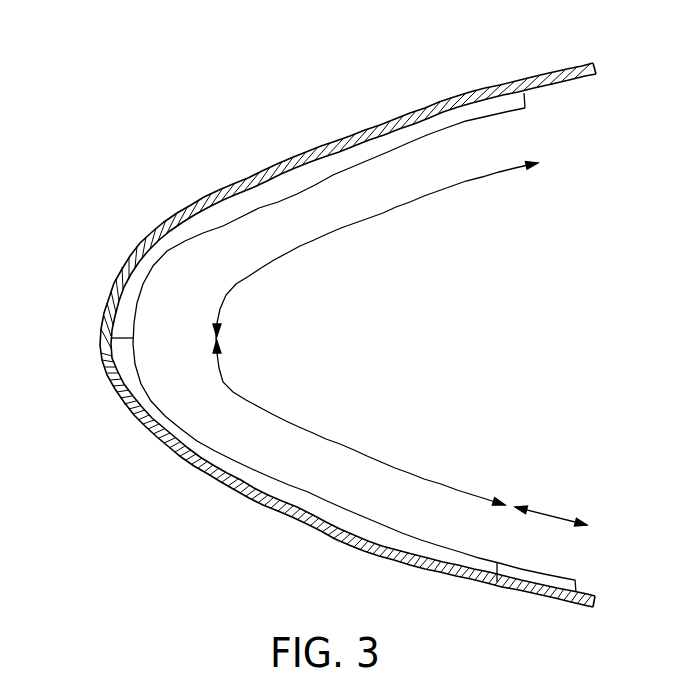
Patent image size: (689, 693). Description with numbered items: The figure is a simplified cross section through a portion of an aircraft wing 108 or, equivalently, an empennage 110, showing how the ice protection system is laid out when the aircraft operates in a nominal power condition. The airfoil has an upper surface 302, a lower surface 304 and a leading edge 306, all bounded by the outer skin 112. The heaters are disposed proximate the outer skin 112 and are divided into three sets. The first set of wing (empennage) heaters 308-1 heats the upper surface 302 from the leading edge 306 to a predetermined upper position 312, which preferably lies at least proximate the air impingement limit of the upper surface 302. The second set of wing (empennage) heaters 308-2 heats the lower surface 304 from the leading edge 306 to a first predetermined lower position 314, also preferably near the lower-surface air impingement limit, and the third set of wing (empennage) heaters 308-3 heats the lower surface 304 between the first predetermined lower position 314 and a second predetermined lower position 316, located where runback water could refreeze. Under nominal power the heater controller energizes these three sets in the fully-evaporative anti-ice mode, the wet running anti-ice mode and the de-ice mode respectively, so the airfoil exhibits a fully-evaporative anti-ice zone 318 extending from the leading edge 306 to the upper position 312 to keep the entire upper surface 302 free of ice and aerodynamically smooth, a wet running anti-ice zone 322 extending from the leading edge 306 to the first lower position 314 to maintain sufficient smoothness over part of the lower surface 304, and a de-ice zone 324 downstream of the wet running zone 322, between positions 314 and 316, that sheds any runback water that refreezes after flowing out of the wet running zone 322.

The aircraft wing 108 is at (125, 190).
The empennage 110 is at (342, 349).
The outer skin 112 is at (258, 505).
The upper surface 302 is at (270, 166).
The lower surface 304 is at (363, 549).
The leading edge 306 is at (100, 347).
The first set of wing (empennage) heaters 308-1 is at (293, 176).
The second set of wing (empennage) heaters 308-2 is at (278, 486).
The third set of wing (empennage) heaters 308-3 is at (560, 558).
The predetermined upper position 312 is at (520, 87).
The first predetermined lower position 314 is at (497, 592).
The second predetermined lower position 316 is at (578, 612).
The fully-evaporative anti-ice zone 318 is at (331, 234).
The wet running anti-ice zone 322 is at (333, 444).
The de-ice zone 324 is at (550, 512).